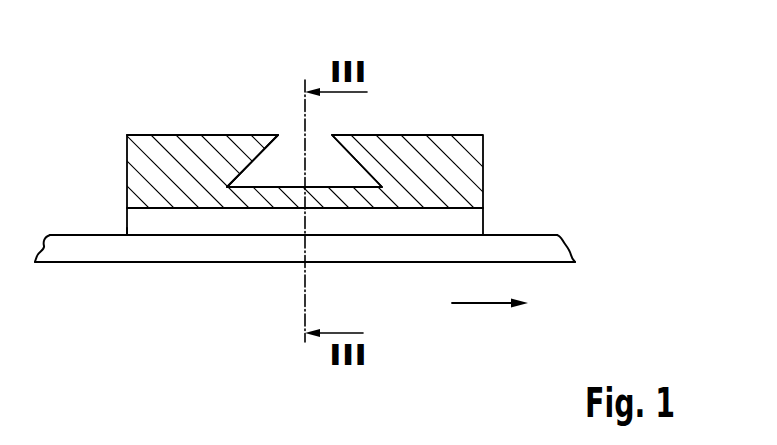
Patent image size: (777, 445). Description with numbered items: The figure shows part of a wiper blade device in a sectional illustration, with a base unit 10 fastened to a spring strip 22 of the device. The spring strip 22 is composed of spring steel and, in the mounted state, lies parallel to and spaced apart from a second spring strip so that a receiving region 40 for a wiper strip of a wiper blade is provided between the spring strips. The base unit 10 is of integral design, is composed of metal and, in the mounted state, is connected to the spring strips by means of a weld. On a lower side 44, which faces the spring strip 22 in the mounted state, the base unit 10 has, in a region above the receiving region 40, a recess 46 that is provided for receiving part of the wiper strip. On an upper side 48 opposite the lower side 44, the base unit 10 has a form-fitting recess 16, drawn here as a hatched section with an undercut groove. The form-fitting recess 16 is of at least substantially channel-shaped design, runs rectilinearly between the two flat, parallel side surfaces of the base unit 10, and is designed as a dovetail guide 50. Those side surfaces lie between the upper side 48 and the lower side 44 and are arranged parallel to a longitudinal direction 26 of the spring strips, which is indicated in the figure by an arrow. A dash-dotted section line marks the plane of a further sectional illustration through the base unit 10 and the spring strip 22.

The base unit 10 is at (445, 143).
The upper side 48 is at (171, 128).
The form-fitting recess 16 is at (301, 123).
The dovetail guide 50 is at (287, 130).
The recess 46 is at (494, 219).
The spring strip 22 is at (540, 242).
The lower side 44 is at (218, 250).
The receiving region 40 is at (111, 252).
The longitudinal direction 26 is at (485, 304).